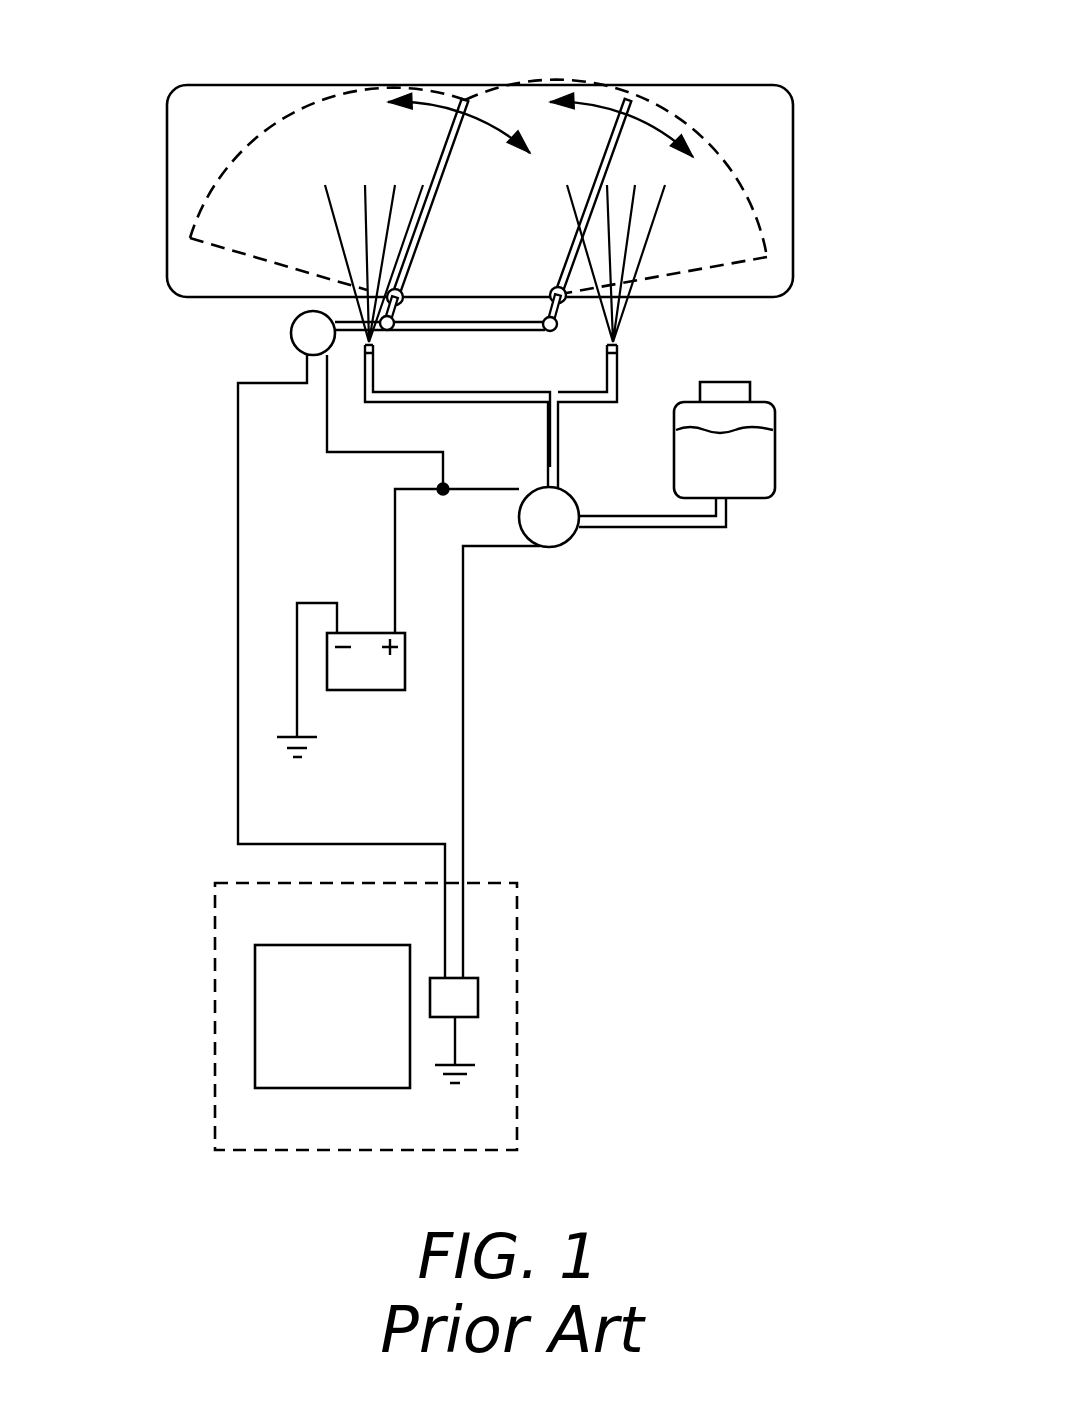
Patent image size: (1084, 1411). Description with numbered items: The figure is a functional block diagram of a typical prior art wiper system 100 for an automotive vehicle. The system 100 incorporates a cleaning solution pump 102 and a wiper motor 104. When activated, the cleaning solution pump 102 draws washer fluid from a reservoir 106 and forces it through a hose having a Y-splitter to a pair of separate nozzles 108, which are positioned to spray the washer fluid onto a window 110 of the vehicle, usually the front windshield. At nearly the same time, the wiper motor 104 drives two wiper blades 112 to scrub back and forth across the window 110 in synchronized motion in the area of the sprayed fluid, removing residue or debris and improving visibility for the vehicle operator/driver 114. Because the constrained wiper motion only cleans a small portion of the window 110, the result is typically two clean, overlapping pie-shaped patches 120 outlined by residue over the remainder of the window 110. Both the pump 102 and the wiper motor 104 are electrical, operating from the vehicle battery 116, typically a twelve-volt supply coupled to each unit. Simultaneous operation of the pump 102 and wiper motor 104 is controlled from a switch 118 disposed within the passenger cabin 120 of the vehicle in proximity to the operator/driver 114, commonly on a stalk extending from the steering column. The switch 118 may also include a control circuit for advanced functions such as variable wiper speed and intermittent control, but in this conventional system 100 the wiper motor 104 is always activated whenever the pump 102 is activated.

The wiper system 100 is at (828, 36).
The cleaning solution pump 102 is at (558, 547).
The wiper motor 104 is at (300, 352).
The reservoir 106 is at (740, 498).
The nozzles 108 is at (656, 336).
The window 110 is at (167, 142).
The wiper blades 112 is at (384, 116).
The operator/driver 114 is at (255, 1015).
The vehicle battery 116 is at (355, 690).
The switch 118 is at (478, 1000).
The passenger cabin 120 is at (250, 138).